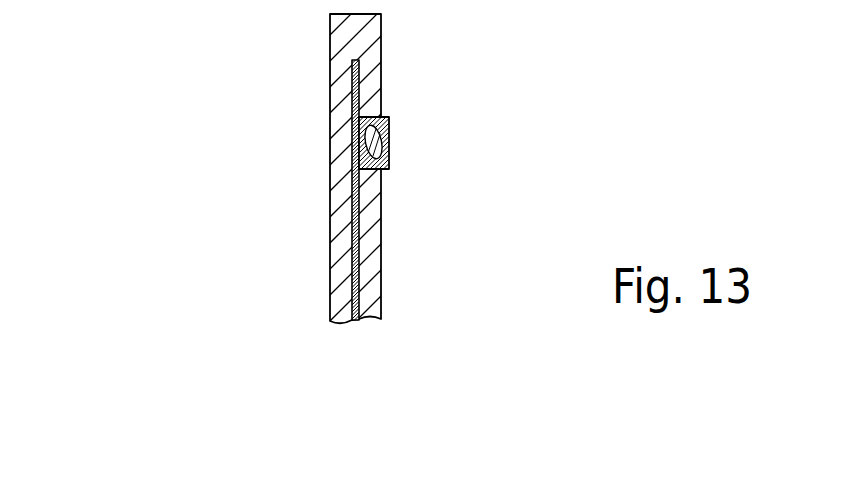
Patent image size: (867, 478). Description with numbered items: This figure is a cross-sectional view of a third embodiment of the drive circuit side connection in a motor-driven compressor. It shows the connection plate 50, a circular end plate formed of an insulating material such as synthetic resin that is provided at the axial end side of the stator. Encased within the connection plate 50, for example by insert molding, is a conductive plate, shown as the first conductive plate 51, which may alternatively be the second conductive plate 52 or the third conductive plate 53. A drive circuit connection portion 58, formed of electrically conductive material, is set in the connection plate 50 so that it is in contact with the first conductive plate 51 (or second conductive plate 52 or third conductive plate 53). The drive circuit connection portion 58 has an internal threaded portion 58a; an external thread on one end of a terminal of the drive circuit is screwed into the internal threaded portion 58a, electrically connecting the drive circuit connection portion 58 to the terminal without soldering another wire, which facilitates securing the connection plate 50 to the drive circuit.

The connection plate 50 is at (330, 73).
The first conductive plate 51 is at (225, 189).
The second conductive plate 52 is at (355, 123).
The third conductive plate 53 is at (355, 204).
The drive circuit connection portion 58 is at (426, 136).
The internal threaded portion 58a is at (389, 147).